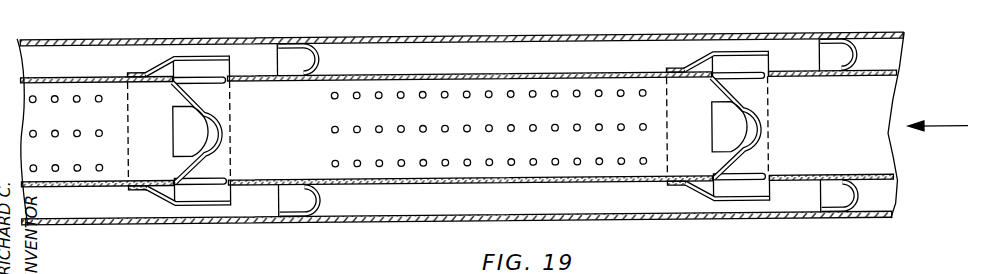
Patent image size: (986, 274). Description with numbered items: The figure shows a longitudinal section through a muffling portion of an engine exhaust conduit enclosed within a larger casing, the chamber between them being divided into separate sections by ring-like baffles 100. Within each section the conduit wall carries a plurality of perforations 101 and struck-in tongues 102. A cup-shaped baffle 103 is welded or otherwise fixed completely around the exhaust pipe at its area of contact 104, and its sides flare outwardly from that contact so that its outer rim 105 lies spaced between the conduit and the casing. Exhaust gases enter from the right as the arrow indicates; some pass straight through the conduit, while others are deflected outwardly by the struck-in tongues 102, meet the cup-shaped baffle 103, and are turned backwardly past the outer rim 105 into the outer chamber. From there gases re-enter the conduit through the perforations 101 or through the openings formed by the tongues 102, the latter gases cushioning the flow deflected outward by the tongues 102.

The baffle 100 is at (320, 58).
The perforations 101 is at (512, 71).
The struck-in tongue 102 is at (180, 125).
The cup-shaped baffle 103 is at (168, 54).
The area of contact 104 is at (130, 187).
The outer rim 105 is at (230, 65).